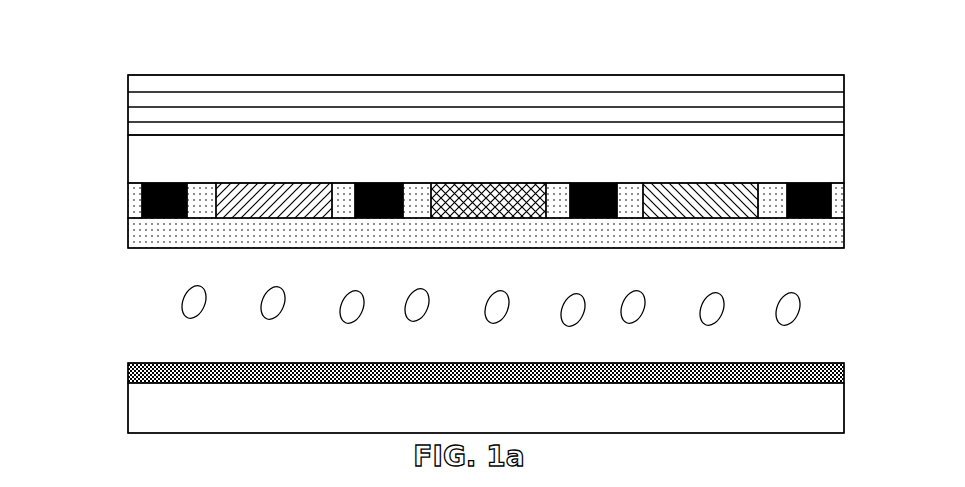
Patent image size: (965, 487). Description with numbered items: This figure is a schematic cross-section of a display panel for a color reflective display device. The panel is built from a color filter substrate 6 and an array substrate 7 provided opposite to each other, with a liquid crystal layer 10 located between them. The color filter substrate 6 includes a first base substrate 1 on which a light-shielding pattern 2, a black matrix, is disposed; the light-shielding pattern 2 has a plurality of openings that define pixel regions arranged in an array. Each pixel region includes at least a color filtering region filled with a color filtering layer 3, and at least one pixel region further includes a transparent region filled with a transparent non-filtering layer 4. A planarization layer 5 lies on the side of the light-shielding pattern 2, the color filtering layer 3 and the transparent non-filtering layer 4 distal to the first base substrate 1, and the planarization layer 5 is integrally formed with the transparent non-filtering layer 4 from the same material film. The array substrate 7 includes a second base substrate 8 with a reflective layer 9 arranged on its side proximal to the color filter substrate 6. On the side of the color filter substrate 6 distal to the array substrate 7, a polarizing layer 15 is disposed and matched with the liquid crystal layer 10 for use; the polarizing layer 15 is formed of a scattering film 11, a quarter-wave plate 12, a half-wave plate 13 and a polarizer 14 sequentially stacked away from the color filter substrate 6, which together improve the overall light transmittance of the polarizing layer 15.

The first base substrate 1 is at (131, 165).
The light-shielding pattern 2 is at (131, 200).
The color filtering layer 3 is at (265, 194).
The transparent non-filtering layer 4 is at (204, 197).
The planarization layer 5 is at (131, 235).
The color filter substrate 6 is at (887, 163).
The array substrate 7 is at (893, 378).
The second base substrate 8 is at (131, 408).
The reflective layer 9 is at (131, 373).
The liquid crystal layer 10 is at (866, 283).
The scattering film 11 is at (118, 132).
The quarter-wave plate 12 is at (118, 115).
The half-wave plate 13 is at (118, 98).
The polarizer 14 is at (118, 80).
The polarizing layer 15 is at (70, 68).